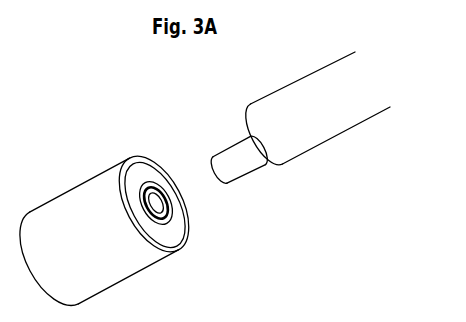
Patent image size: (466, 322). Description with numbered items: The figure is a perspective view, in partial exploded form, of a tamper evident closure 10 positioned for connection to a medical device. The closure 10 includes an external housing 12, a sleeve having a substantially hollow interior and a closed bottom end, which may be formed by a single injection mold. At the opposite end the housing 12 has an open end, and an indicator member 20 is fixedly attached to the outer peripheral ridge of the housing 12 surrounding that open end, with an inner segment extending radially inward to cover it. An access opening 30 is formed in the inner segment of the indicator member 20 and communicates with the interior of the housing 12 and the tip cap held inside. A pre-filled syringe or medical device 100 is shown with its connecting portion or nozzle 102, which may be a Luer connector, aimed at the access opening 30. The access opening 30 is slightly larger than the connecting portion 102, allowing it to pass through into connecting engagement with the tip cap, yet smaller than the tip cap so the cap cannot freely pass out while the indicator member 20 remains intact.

The tamper evident closure 10 is at (157, 207).
The external housing 12 is at (38, 207).
The indicator member 20 is at (190, 237).
The access opening 30 is at (153, 185).
The syringe 100 is at (352, 131).
The connecting portion 102 is at (238, 176).